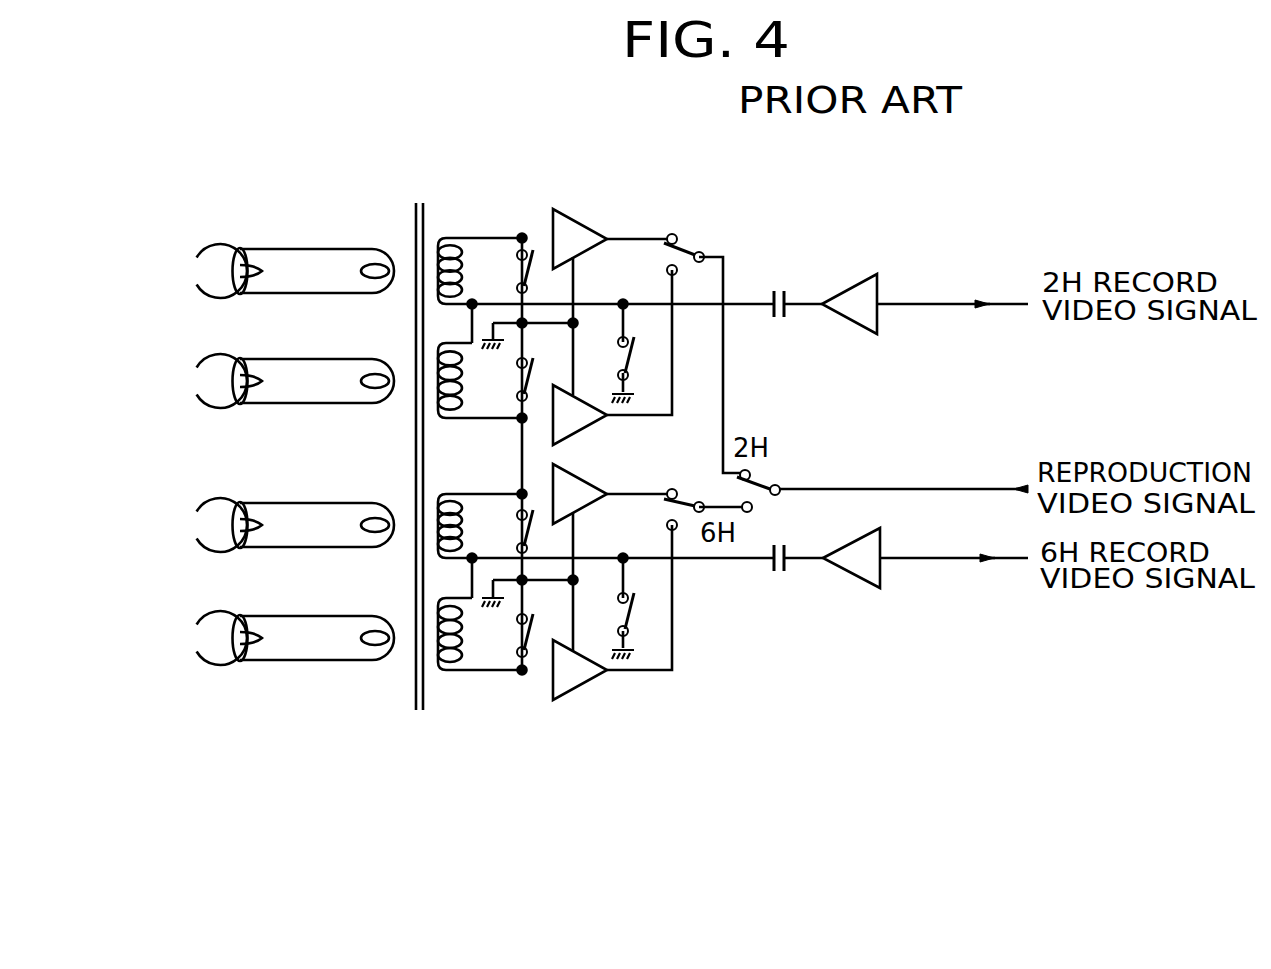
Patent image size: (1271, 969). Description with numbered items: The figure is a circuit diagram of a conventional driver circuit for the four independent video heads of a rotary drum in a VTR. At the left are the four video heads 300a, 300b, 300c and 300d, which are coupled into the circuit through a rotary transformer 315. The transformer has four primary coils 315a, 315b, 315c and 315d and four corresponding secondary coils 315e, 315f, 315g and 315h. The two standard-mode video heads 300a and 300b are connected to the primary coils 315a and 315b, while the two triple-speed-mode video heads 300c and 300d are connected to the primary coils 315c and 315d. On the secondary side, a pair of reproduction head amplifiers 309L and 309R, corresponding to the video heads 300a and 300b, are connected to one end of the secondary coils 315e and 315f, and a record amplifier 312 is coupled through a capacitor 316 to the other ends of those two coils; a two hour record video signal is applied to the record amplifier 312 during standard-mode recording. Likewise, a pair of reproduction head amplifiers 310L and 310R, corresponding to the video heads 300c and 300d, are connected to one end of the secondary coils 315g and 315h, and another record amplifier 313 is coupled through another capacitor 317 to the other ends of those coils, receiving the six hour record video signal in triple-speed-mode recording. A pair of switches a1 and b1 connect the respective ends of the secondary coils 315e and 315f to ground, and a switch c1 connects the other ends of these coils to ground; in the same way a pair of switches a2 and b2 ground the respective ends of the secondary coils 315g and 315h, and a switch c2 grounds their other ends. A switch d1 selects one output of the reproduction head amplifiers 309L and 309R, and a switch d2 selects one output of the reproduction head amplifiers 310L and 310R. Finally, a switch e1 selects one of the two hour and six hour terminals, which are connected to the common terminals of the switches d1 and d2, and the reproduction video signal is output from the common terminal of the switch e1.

The video head 300a is at (213, 270).
The video head 300b is at (213, 380).
The video head 300c is at (215, 524).
The video head 300d is at (215, 637).
The rotary transformer 315 is at (427, 232).
The primary coil 315a is at (372, 249).
The primary coil 315b is at (372, 359).
The primary coil 315c is at (370, 502).
The primary coil 315d is at (372, 616).
The secondary coil 315e is at (453, 240).
The secondary coil 315f is at (440, 422).
The secondary coil 315g is at (452, 502).
The secondary coil 315h is at (458, 662).
The reproduction head amplifier 309L is at (582, 231).
The reproduction head amplifier 309R is at (581, 422).
The reproduction head amplifier 310L is at (578, 498).
The reproduction head amplifier 310R is at (560, 673).
The record amplifier 312 is at (862, 280).
The record amplifier 313 is at (872, 545).
The capacitor 316 is at (783, 289).
The capacitor 317 is at (782, 575).
The switch a1 is at (517, 266).
The switch b1 is at (517, 374).
The switch c1 is at (637, 348).
The switch d1 is at (684, 244).
The switch e1 is at (758, 472).
The switch a2 is at (517, 524).
The switch b2 is at (517, 629).
The switch c2 is at (637, 606).
The switch d2 is at (674, 488).